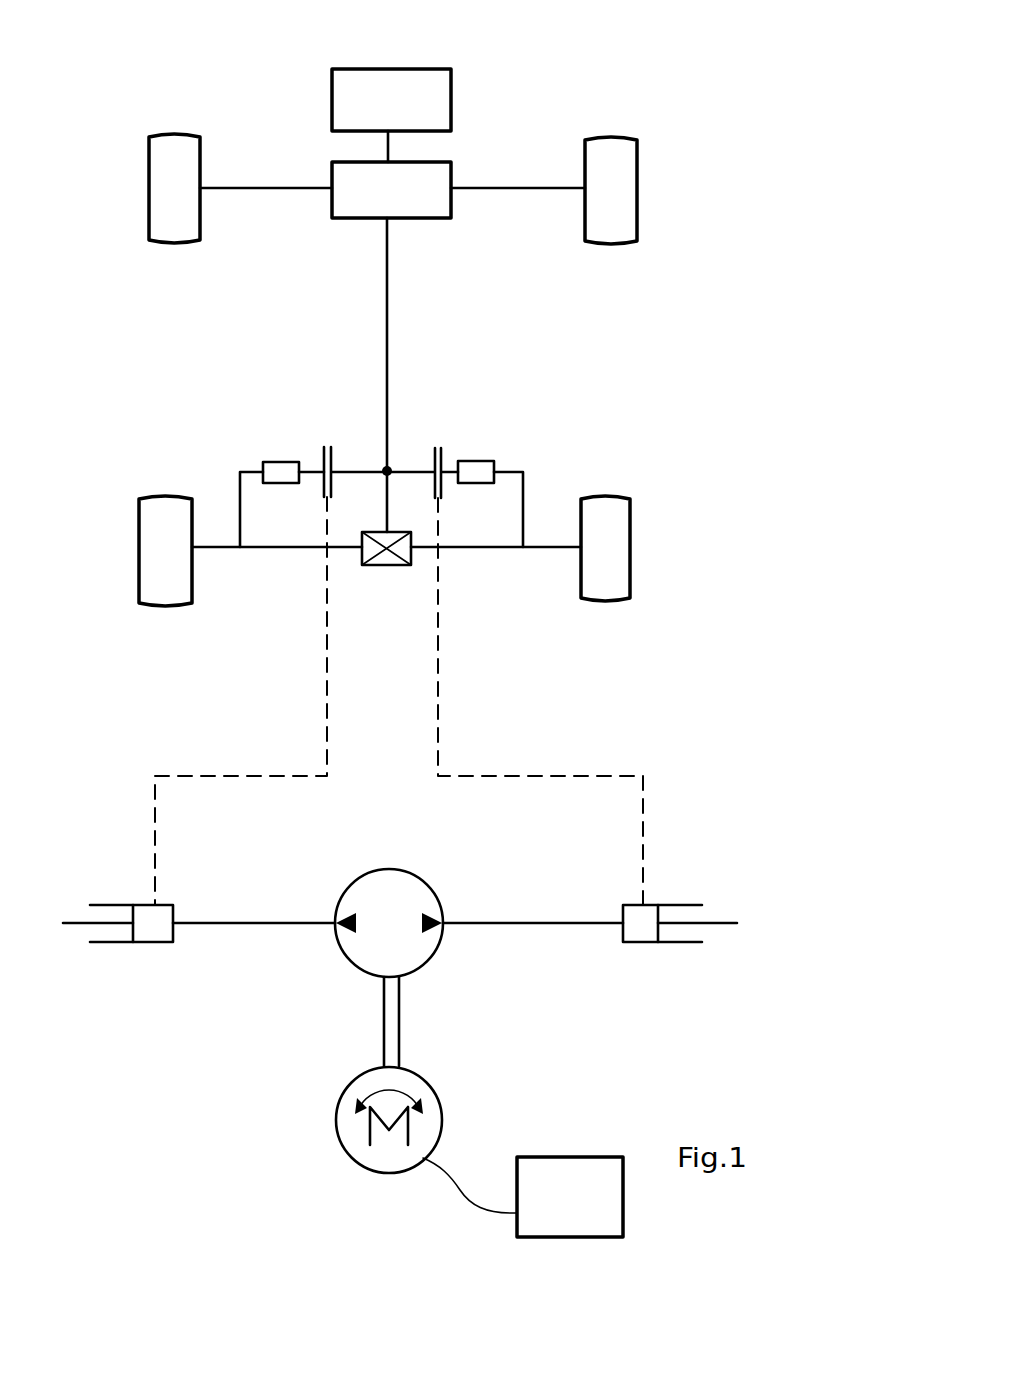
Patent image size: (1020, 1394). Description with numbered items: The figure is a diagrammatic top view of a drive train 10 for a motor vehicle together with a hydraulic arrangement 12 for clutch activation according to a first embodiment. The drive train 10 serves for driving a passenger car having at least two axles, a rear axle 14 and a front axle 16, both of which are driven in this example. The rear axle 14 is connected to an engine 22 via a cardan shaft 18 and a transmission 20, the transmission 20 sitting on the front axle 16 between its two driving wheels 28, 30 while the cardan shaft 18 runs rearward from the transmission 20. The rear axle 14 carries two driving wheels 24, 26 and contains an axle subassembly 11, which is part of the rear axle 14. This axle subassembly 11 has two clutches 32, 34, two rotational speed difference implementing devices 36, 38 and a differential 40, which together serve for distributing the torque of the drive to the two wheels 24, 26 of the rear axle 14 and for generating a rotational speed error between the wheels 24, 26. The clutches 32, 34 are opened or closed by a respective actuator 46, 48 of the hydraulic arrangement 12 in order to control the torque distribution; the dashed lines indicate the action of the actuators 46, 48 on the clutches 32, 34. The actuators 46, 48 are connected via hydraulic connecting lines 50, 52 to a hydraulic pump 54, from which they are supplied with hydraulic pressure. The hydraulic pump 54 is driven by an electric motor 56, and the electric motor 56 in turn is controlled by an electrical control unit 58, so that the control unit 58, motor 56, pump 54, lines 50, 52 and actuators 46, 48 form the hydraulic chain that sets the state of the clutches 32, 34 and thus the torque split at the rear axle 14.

The drive train 10 is at (708, 237).
The axle subassembly 11 is at (713, 553).
The hydraulic arrangement 12 is at (715, 726).
The rear axle 14 is at (543, 547).
The front axle 16 is at (511, 186).
The cardan shaft 18 is at (388, 355).
The transmission 20 is at (355, 218).
The engine 22 is at (390, 69).
The driving wheel 24 is at (623, 543).
The driving wheel 26 is at (145, 542).
The driving wheel 28 is at (149, 182).
The driving wheel 30 is at (623, 203).
The clutch 32 is at (438, 447).
The clutch 34 is at (328, 447).
The rotational speed difference implementing device 36 is at (487, 460).
The rotational speed difference implementing device 38 is at (272, 462).
The differential 40 is at (387, 565).
The actuator 46 is at (115, 905).
The actuator 48 is at (682, 904).
The hydraulic connecting line 50 is at (238, 925).
The hydraulic connecting line 52 is at (538, 924).
The hydraulic pump 54 is at (417, 874).
The electric motor 56 is at (336, 1138).
The electrical control unit 58 is at (587, 1157).